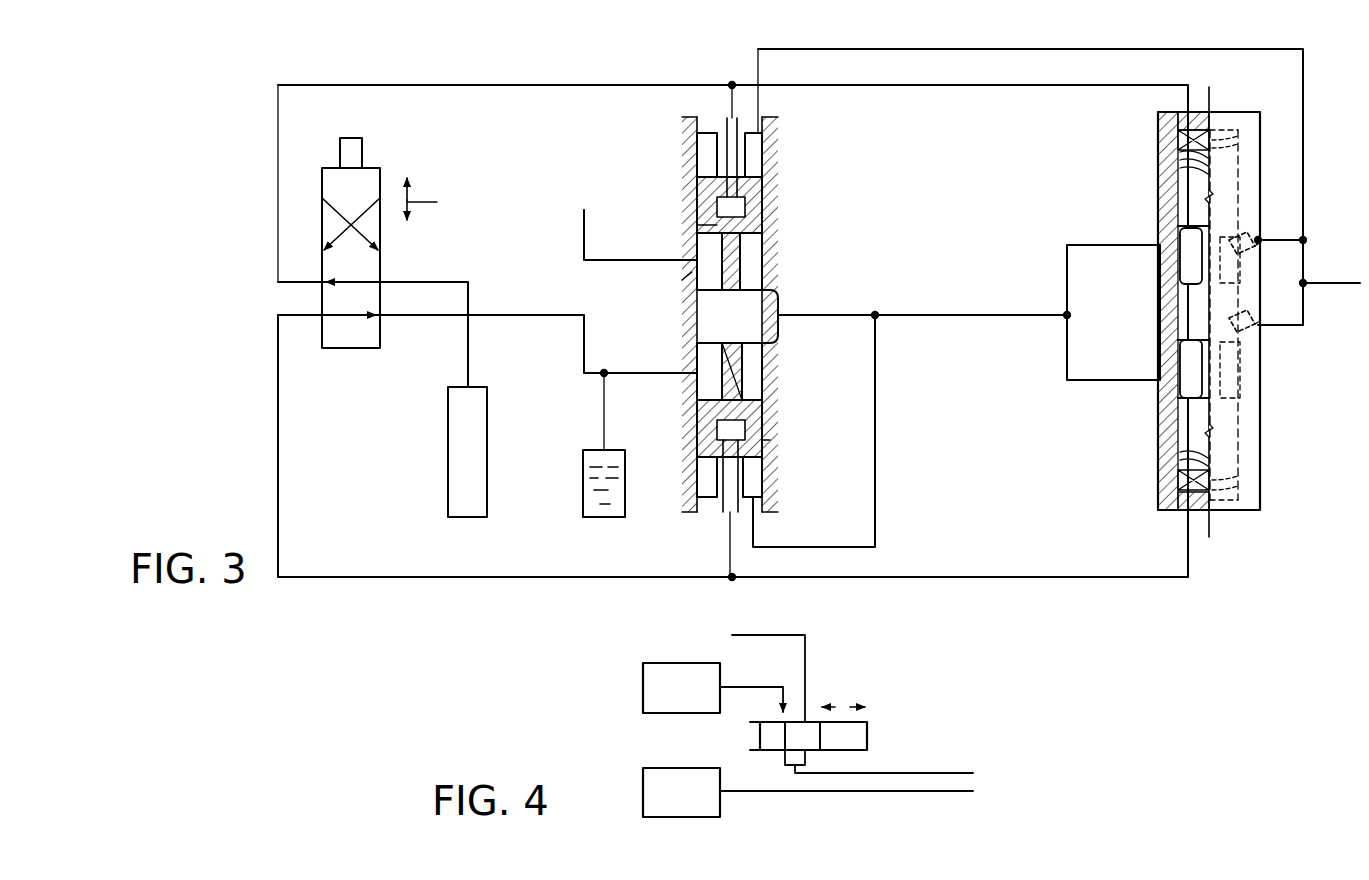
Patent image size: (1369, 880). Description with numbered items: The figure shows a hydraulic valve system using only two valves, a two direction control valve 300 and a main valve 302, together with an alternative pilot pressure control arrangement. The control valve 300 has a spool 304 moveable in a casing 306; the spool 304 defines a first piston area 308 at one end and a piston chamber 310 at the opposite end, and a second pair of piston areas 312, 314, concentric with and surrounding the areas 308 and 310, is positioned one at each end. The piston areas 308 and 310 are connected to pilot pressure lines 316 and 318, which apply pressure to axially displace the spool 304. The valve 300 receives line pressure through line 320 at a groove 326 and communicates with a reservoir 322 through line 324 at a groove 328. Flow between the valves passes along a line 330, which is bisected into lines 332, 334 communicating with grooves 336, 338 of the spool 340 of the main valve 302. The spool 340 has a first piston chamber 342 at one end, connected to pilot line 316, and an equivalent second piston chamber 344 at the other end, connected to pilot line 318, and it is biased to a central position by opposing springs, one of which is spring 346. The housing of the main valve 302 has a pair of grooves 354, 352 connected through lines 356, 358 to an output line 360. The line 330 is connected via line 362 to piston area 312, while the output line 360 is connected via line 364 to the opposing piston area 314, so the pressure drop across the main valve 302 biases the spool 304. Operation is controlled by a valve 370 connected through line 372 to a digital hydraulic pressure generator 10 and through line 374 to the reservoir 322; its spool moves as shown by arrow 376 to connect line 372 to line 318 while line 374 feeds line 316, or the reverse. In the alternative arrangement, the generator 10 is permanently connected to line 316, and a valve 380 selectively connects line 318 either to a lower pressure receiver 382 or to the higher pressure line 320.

In FIG. 3, the digital hydraulic pressure generator 10 is at (448, 450).
In FIG. 4, the digital hydraulic pressure generator 10 is at (678, 768).
In FIG. 3, the two direction control valve 300 is at (762, 220).
In FIG. 3, the main valve 302 is at (1260, 420).
In FIG. 3, the spool 304 is at (734, 268).
In FIG. 3, the casing 306 is at (762, 440).
In FIG. 3, the first piston area 308 is at (762, 408).
In FIG. 3, the piston chamber 310 is at (697, 225).
In FIG. 3, the second piston area 312 is at (752, 485).
In FIG. 3, the second piston area 314 is at (705, 170).
In FIG. 3, the pilot pressure line 316 is at (985, 577).
In FIG. 4, the pilot pressure line 316 is at (973, 791).
In FIG. 3, the pilot pressure line 318 is at (732, 85).
In FIG. 4, the pilot pressure line 318 is at (973, 773).
In FIG. 3, the pressure line 320 is at (640, 262).
In FIG. 4, the pressure line 320 is at (805, 648).
In FIG. 3, the reservoir 322 is at (583, 467).
In FIG. 3, the reservoir line 324 is at (662, 371).
In FIG. 3, the groove 326 is at (682, 290).
In FIG. 3, the groove 328 is at (697, 390).
In FIG. 3, the line 330 is at (966, 314).
In FIG. 3, the line 332 is at (1098, 245).
In FIG. 3, the line 334 is at (1085, 380).
In FIG. 3, the groove 336 is at (1188, 270).
In FIG. 3, the groove 338 is at (1188, 352).
In FIG. 3, the spool 340 is at (1236, 440).
In FIG. 3, the first piston chamber 342 is at (1180, 458).
In FIG. 3, the second piston chamber 344 is at (1180, 162).
In FIG. 3, the spring 346 is at (1178, 140).
In FIG. 3, the groove 352 is at (1258, 325).
In FIG. 3, the groove 354 is at (1258, 240).
In FIG. 3, the line 356 is at (1303, 305).
In FIG. 3, the line 358 is at (1278, 241).
In FIG. 3, the output line 360 is at (1312, 283).
In FIG. 3, the line 362 is at (875, 472).
In FIG. 3, the line 364 is at (1061, 48).
In FIG. 3, the valve 370 is at (362, 148).
In FIG. 3, the line 372 is at (468, 290).
In FIG. 3, the line 374 is at (584, 365).
In FIG. 3, the arrow 376 is at (444, 199).
In FIG. 4, the valve 380 is at (867, 735).
In FIG. 4, the receiver 382 is at (680, 663).